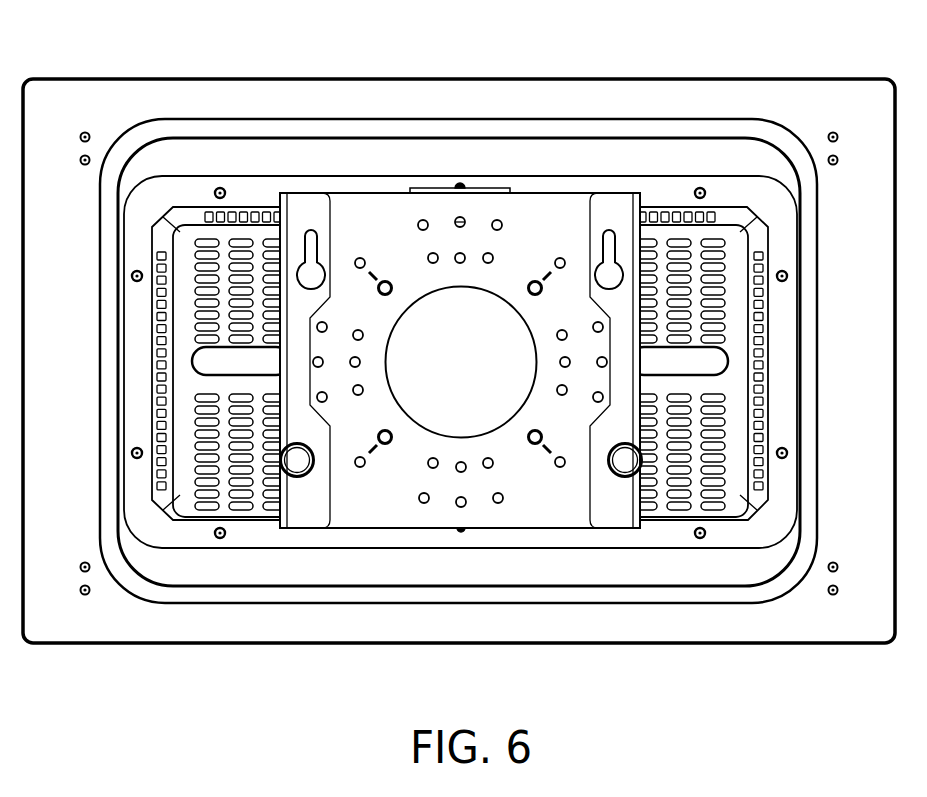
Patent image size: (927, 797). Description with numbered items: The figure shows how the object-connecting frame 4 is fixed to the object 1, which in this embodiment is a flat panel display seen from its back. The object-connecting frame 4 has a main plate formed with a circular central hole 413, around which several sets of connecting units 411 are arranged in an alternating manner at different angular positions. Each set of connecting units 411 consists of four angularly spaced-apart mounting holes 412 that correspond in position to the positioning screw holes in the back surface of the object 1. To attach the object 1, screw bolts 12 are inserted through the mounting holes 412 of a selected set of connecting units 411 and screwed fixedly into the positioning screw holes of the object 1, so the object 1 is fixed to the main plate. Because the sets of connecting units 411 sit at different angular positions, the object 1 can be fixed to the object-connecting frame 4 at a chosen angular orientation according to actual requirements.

The object 1 is at (690, 98).
The object-connecting frame 4 is at (460, 358).
The connecting units 411 is at (481, 216).
The mounting holes 412 is at (454, 251).
The central hole 413 is at (462, 422).
The screw bolts 12 is at (528, 434).